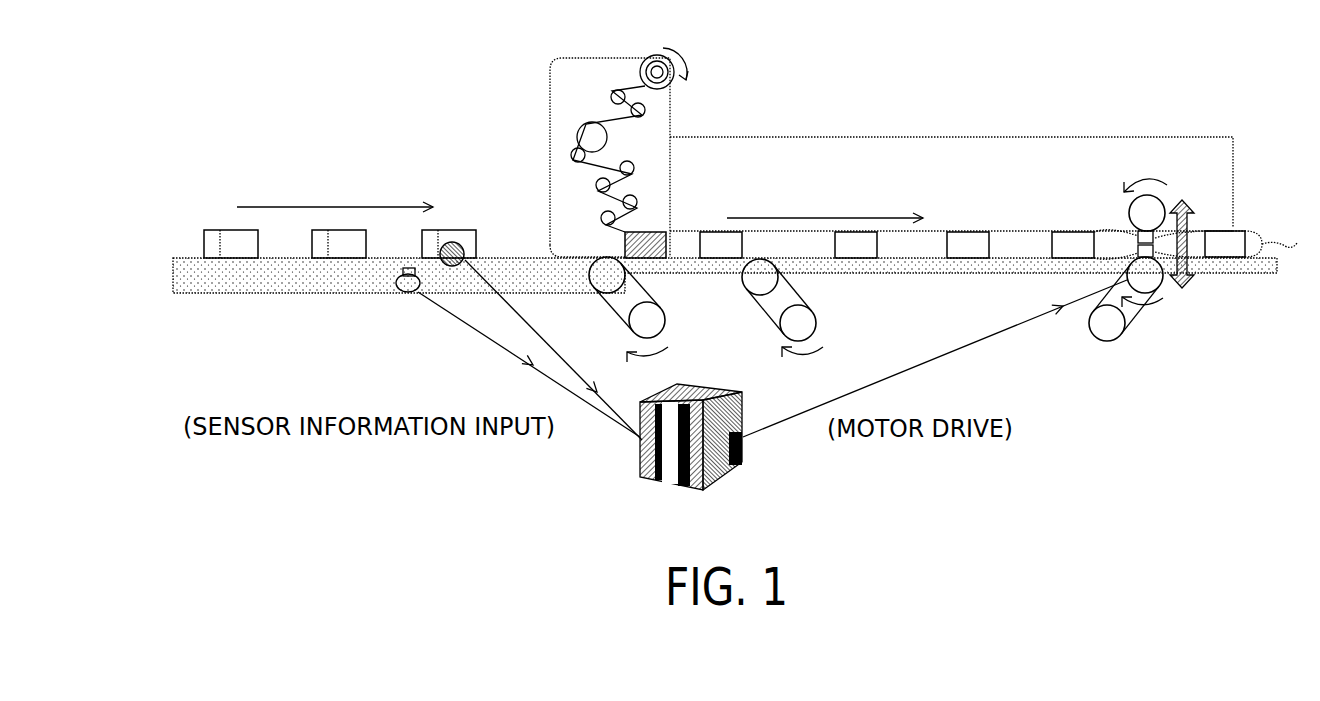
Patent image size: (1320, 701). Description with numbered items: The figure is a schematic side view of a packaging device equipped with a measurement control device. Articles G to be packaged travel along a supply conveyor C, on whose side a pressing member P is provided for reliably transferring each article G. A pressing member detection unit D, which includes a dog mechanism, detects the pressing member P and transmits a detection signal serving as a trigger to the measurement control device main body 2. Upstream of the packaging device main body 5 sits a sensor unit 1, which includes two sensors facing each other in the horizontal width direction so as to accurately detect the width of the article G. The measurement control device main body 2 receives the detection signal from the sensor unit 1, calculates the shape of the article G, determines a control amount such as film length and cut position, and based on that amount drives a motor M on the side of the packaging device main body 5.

The sensor unit 1 is at (466, 233).
The measurement control device main body 2 is at (743, 465).
The packaging device main body 5 is at (923, 118).
The pressing member P is at (308, 243).
The supply conveyor C is at (307, 282).
The article to be packaged G is at (233, 247).
The pressing member detection unit D is at (406, 290).
The motor M is at (1100, 328).